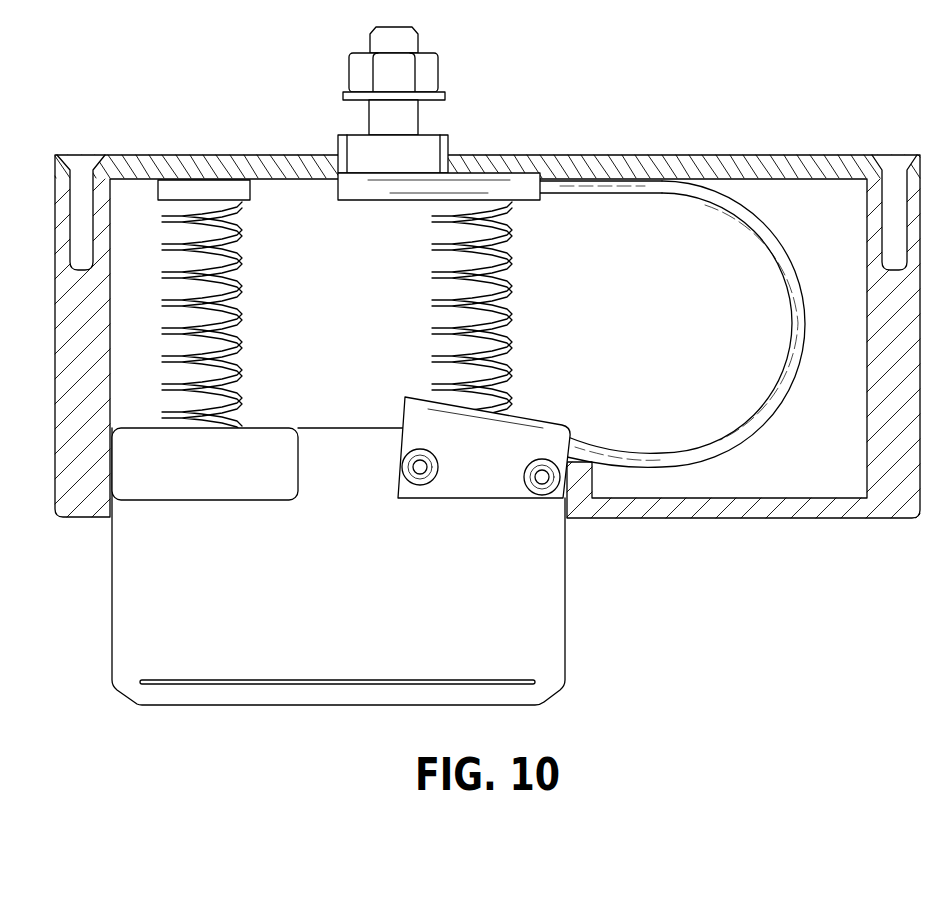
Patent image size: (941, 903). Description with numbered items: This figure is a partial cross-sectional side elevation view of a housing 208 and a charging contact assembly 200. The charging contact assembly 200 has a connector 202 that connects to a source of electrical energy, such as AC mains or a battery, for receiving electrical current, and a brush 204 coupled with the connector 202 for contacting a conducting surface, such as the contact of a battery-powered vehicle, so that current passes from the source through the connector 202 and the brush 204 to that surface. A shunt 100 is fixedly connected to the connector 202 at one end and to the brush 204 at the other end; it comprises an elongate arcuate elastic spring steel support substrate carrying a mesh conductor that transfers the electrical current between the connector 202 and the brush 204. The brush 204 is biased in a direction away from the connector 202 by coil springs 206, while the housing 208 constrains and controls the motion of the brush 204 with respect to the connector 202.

The shunt 100 is at (780, 230).
The charging contact assembly 200 is at (632, 82).
The connector 202 is at (497, 173).
The brush 204 is at (566, 572).
The spring 206 is at (247, 250).
The housing 208 is at (733, 155).